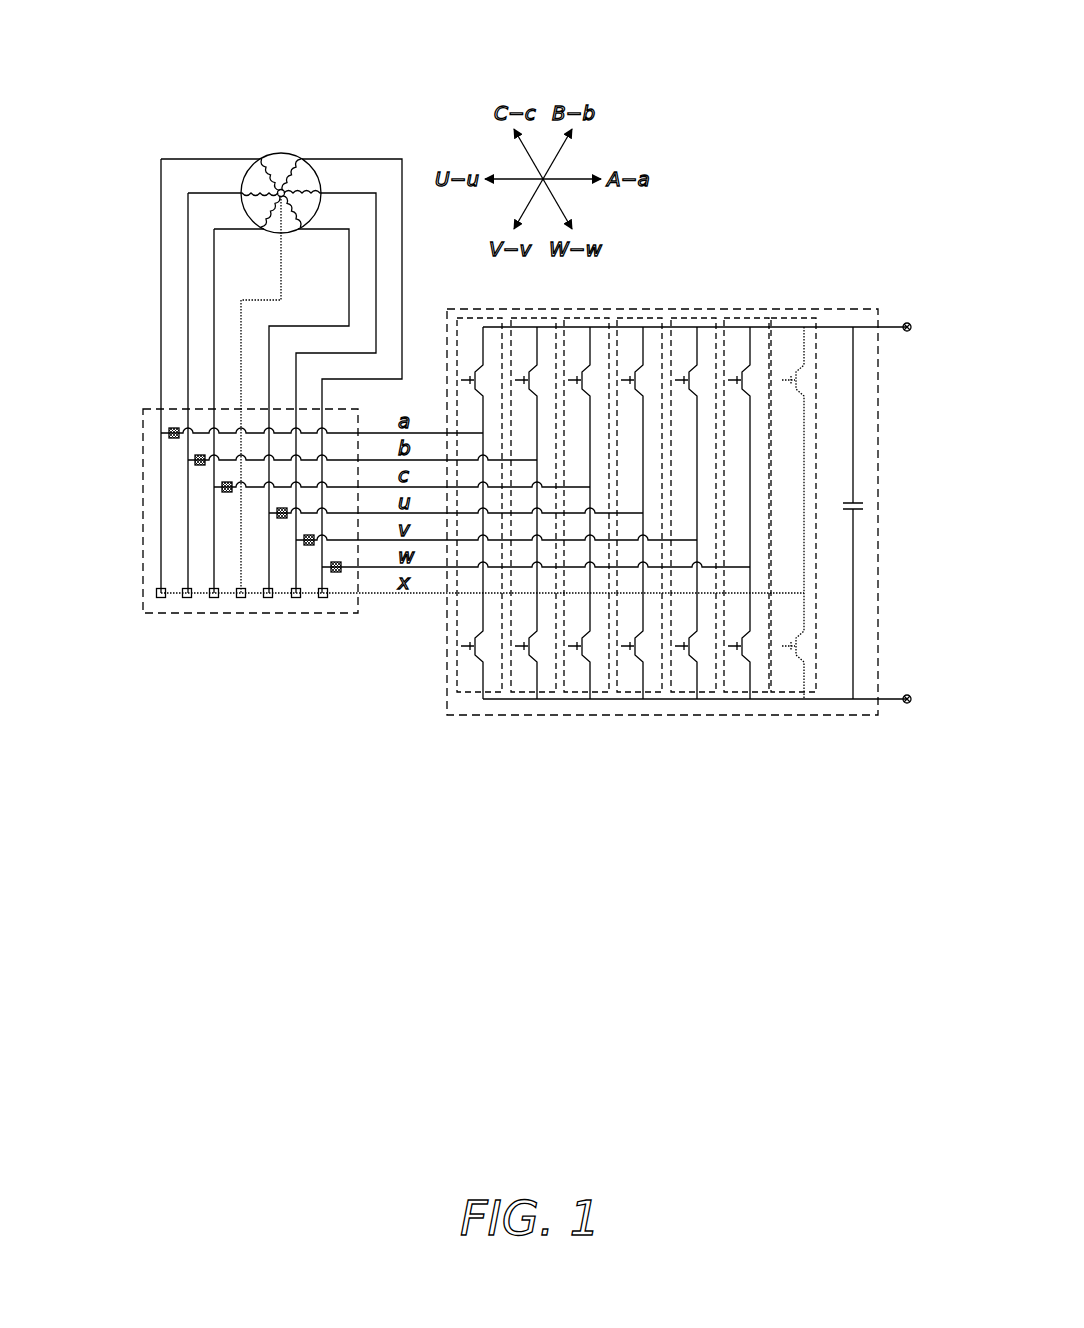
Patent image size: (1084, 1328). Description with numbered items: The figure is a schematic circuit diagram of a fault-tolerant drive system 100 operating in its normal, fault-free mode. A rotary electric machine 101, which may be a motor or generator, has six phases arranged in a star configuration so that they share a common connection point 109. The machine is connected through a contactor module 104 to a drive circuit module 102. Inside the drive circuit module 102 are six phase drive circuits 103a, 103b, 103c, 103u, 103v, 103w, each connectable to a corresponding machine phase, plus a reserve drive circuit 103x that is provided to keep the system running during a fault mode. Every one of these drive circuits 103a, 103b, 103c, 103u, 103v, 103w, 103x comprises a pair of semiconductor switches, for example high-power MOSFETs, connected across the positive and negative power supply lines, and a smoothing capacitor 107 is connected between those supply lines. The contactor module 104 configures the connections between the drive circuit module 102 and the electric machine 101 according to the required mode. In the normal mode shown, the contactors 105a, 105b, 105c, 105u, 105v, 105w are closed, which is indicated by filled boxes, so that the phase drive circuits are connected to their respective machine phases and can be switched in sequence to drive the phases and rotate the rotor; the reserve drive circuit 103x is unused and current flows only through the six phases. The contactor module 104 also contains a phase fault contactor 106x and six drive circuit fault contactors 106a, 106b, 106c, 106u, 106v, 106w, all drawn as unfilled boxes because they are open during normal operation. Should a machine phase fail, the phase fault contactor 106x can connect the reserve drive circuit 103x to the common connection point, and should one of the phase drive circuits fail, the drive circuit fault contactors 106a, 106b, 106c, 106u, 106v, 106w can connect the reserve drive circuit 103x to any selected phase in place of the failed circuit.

The fault-tolerant drive system 100 is at (788, 72).
The rotary electric machine 101 is at (284, 154).
The drive circuit module 102 is at (743, 309).
The phase drive circuit 103a is at (463, 692).
The phase drive circuit 103b is at (519, 692).
The phase drive circuit 103c is at (574, 692).
The phase drive circuit 103u is at (630, 692).
The phase drive circuit 103v is at (683, 692).
The phase drive circuit 103w is at (737, 692).
The reserve drive circuit 103x is at (790, 692).
The contactor module 104 is at (343, 613).
The contactor 105a is at (169, 433).
The contactor 105b is at (195, 460).
The contactor 105c is at (222, 487).
The contactor 105u is at (277, 513).
The contactor 105v is at (304, 540).
The contactor 105w is at (331, 567).
The drive circuit fault contactor 106a is at (156, 593).
The drive circuit fault contactor 106b is at (187, 598).
The drive circuit fault contactor 106c is at (214, 598).
The drive circuit fault contactor 106u is at (268, 598).
The drive circuit fault contactor 106v is at (296, 598).
The drive circuit fault contactor 106w is at (323, 598).
The phase fault contactor 106x is at (241, 598).
The smoothing capacitor 107 is at (858, 507).
The common connection point 109 is at (279, 195).